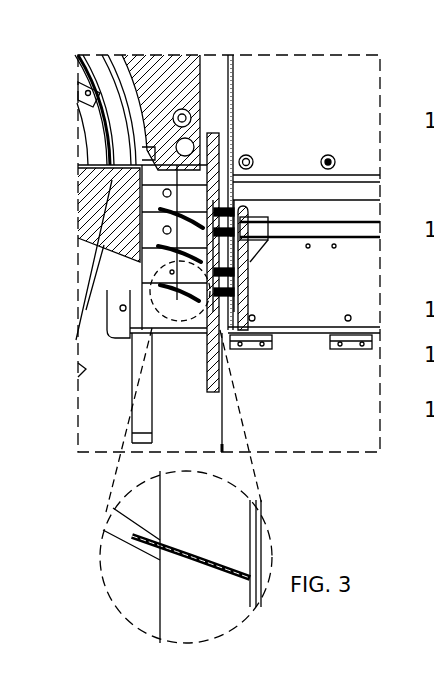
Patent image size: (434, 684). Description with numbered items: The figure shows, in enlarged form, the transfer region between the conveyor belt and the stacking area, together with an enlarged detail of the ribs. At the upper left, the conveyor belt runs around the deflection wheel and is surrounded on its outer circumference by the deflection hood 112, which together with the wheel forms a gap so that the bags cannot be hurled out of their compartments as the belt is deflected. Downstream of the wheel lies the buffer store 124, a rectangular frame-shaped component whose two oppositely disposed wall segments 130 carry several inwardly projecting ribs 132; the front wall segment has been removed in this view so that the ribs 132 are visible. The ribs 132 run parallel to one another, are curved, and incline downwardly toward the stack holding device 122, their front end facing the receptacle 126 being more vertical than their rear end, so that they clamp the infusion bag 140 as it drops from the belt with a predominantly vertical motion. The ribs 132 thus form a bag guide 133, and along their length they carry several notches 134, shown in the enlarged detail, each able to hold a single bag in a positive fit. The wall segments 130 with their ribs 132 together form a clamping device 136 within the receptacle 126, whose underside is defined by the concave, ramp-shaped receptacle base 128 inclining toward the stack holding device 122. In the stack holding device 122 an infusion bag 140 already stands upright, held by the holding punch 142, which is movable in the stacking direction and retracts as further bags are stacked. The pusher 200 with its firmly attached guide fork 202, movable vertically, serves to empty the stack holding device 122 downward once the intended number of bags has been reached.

The deflection hood 112 is at (136, 80).
The stack holding device 122 is at (384, 193).
The buffer store 124 is at (186, 245).
The receptacle 126 is at (157, 193).
The receptacle base 128 is at (198, 312).
The wall segments 130 is at (207, 334).
The ribs 132 is at (172, 272).
The bag guide 133 is at (250, 276).
The notches 134 is at (216, 578).
The clamping device 136 is at (150, 196).
The infusion bag 140 is at (243, 326).
The holding punch 142 is at (380, 228).
The pusher 200 is at (356, 68).
The guide fork 202 is at (233, 73).